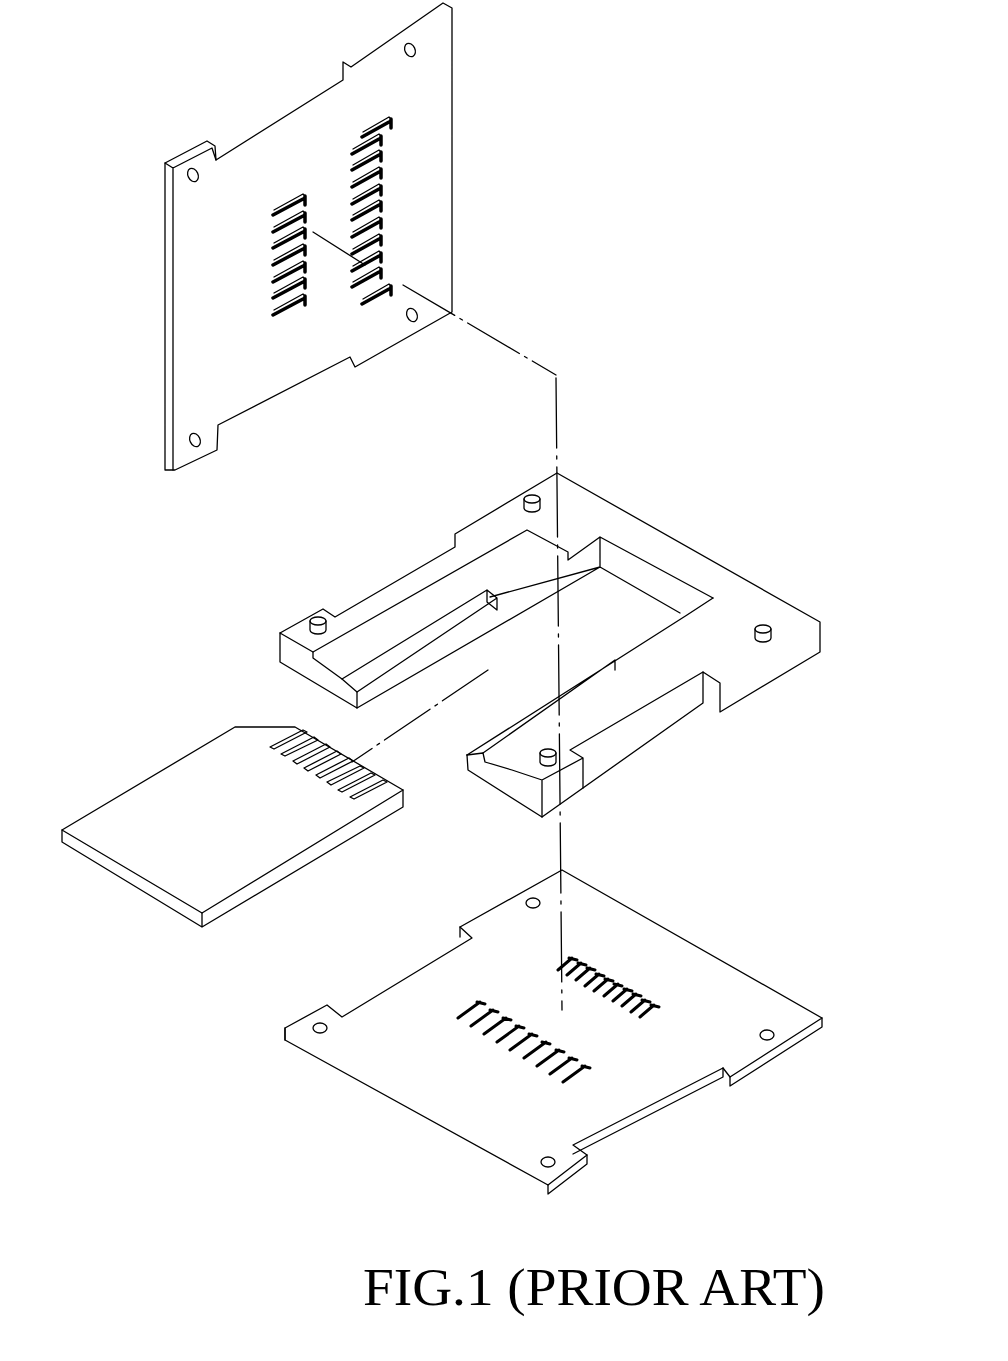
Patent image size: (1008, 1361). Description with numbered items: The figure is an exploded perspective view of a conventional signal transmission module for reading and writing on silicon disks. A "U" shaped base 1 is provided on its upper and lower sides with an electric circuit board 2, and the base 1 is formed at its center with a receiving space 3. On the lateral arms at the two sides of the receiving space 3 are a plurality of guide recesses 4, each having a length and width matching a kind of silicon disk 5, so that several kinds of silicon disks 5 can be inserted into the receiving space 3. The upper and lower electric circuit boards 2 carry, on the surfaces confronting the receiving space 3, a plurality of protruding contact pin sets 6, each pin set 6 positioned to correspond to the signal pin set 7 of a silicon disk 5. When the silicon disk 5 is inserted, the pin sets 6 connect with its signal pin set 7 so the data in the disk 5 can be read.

The "U" shaped base 1 is at (550, 645).
The electric circuit board 2 is at (493, 598).
The receiving space 3 is at (592, 645).
The guide recess 4 is at (422, 605).
The silicon disk 5 is at (251, 814).
The contact pin set 6 is at (288, 293).
The signal pin set 7 is at (352, 768).